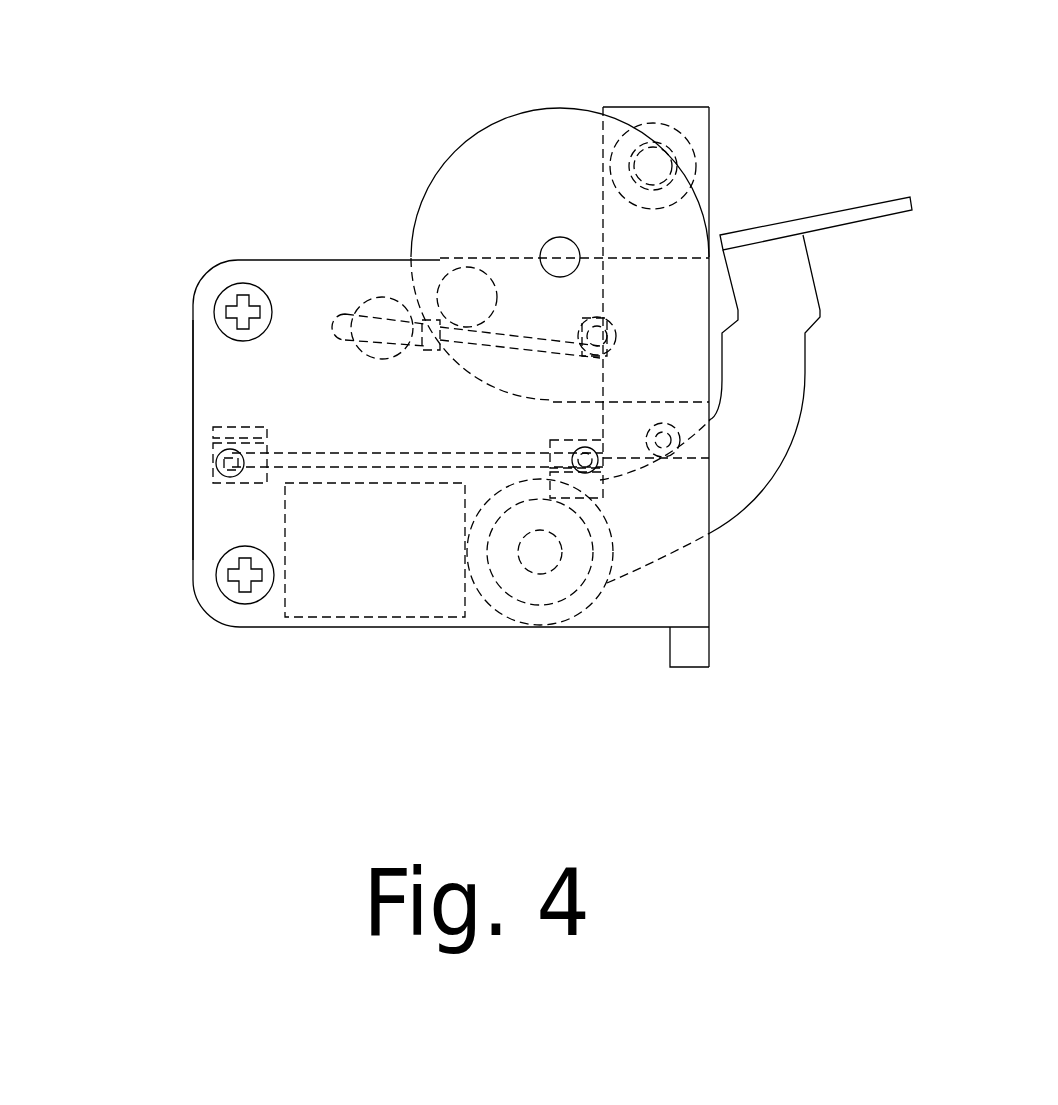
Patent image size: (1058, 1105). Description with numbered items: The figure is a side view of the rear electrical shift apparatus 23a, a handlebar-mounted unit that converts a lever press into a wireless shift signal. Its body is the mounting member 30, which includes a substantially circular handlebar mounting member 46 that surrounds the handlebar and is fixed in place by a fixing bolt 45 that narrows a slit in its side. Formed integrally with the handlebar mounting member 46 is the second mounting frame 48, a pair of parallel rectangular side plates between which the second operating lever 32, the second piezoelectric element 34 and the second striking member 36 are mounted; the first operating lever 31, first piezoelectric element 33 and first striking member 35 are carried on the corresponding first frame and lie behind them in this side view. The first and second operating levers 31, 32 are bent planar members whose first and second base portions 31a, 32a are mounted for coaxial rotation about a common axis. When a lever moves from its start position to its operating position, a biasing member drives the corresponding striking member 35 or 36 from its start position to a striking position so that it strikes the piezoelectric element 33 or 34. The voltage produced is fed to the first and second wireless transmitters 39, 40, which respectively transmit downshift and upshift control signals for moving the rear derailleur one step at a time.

The mounting member 30 is at (281, 241).
The rear electrical shift apparatus 23a is at (427, 138).
The fixing bolt 45 is at (662, 158).
The handlebar mounting member 46 is at (697, 127).
The second operating lever 32 is at (772, 349).
The first operating lever 31 is at (815, 225).
The second base portion 32a is at (567, 599).
The first base portion 31a is at (580, 620).
The second striking member 36 is at (471, 260).
The first striking member 35 is at (380, 298).
The second piezoelectric element 34 is at (408, 439).
The first piezoelectric element 33 is at (327, 455).
The second wireless transmitter 40 is at (375, 608).
The first wireless transmitter 39 is at (345, 620).
The second mounting frame 48 is at (129, 440).